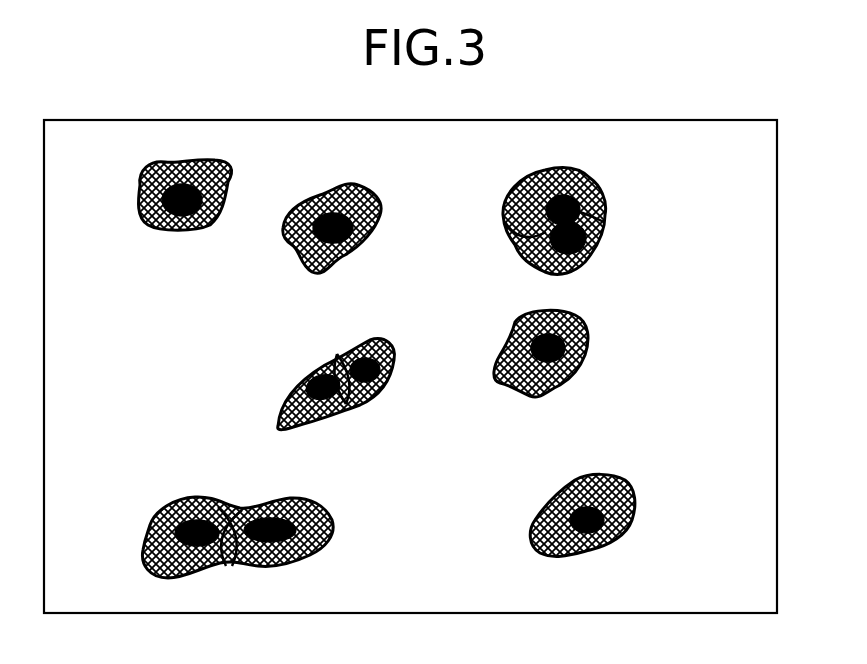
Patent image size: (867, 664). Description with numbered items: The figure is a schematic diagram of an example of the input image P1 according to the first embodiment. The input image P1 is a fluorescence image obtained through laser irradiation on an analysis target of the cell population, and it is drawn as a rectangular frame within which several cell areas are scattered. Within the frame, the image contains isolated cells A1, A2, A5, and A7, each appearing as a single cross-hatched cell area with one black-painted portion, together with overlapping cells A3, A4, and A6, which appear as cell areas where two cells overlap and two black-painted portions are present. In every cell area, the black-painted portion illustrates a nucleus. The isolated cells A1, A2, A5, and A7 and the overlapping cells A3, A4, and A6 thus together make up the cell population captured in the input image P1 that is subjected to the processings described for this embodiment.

The input image P1 is at (670, 120).
The isolated cell A1 is at (230, 166).
The isolated cell A2 is at (366, 190).
The overlapping cells A3 is at (593, 182).
The overlapping cells A4 is at (384, 340).
The isolated cell A5 is at (580, 320).
The overlapping cells A6 is at (220, 500).
The isolated cell A7 is at (620, 481).